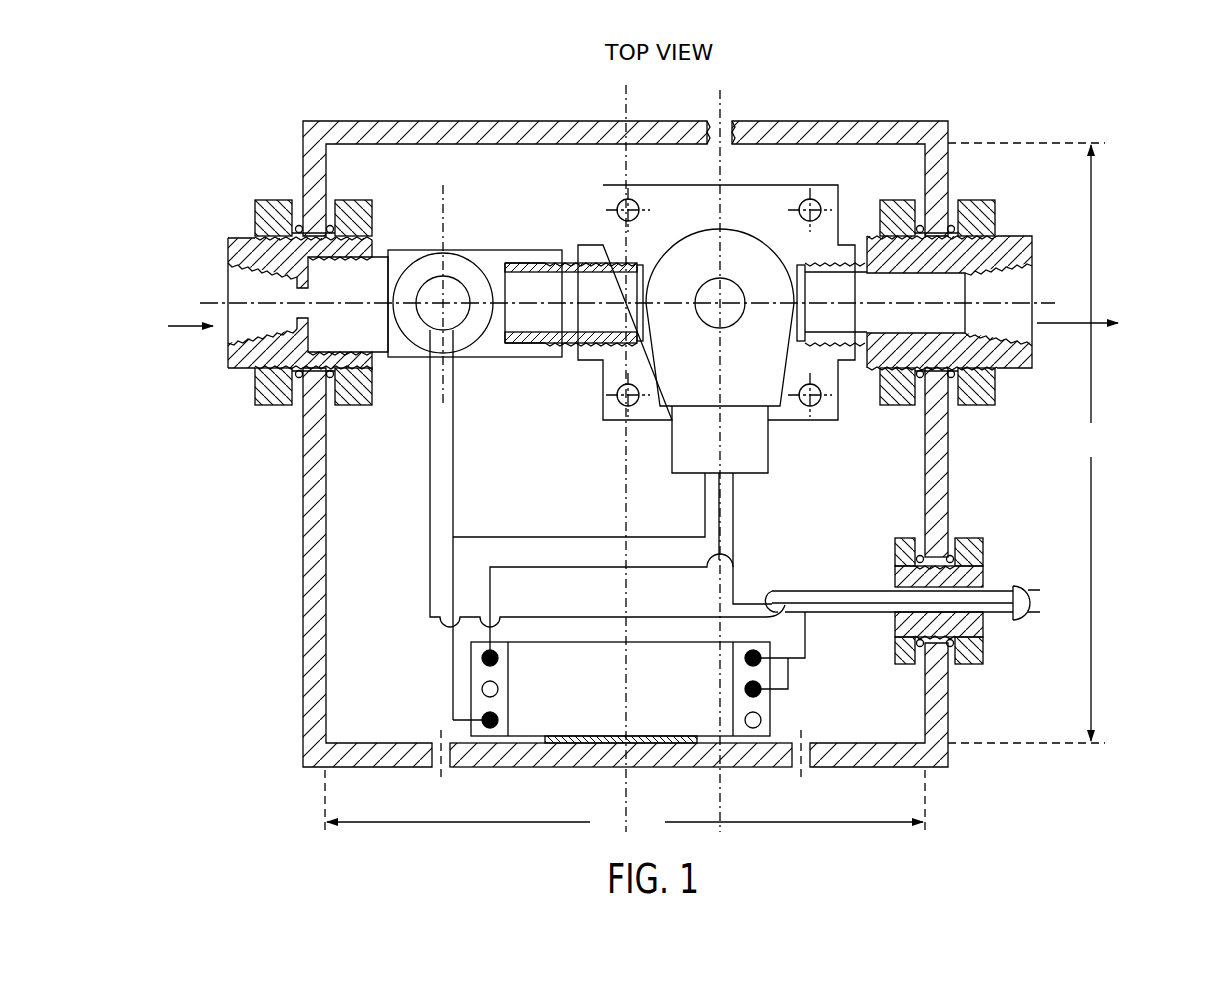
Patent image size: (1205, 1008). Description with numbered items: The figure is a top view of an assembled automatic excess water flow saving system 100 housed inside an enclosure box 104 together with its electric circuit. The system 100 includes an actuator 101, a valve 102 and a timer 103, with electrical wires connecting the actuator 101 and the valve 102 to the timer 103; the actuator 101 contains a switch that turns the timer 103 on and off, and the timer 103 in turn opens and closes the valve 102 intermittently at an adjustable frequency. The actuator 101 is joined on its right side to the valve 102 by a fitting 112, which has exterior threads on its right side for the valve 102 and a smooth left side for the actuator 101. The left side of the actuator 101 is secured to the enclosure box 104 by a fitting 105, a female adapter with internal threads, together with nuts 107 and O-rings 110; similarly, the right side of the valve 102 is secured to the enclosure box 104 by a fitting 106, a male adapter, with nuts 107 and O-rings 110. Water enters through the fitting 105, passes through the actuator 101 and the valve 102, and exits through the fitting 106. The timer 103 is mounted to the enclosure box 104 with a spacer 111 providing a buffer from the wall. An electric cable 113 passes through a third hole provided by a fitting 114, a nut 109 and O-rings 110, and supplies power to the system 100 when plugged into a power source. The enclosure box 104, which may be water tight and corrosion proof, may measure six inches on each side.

The automatic excess water flow saving system 100 is at (284, 93).
The actuator 101 is at (470, 221).
The valve 102 is at (735, 178).
The timer 103 is at (633, 607).
The enclosure box 104 is at (300, 583).
The fitting 105 is at (241, 380).
The fitting 106 is at (1013, 374).
The nuts 107 is at (344, 192).
The nut 109 is at (890, 556).
The O-rings 110 is at (330, 388).
The spacer 111 is at (661, 749).
The fitting 112 is at (546, 349).
The electric cable 113 is at (1031, 578).
The fitting 114 is at (979, 534).